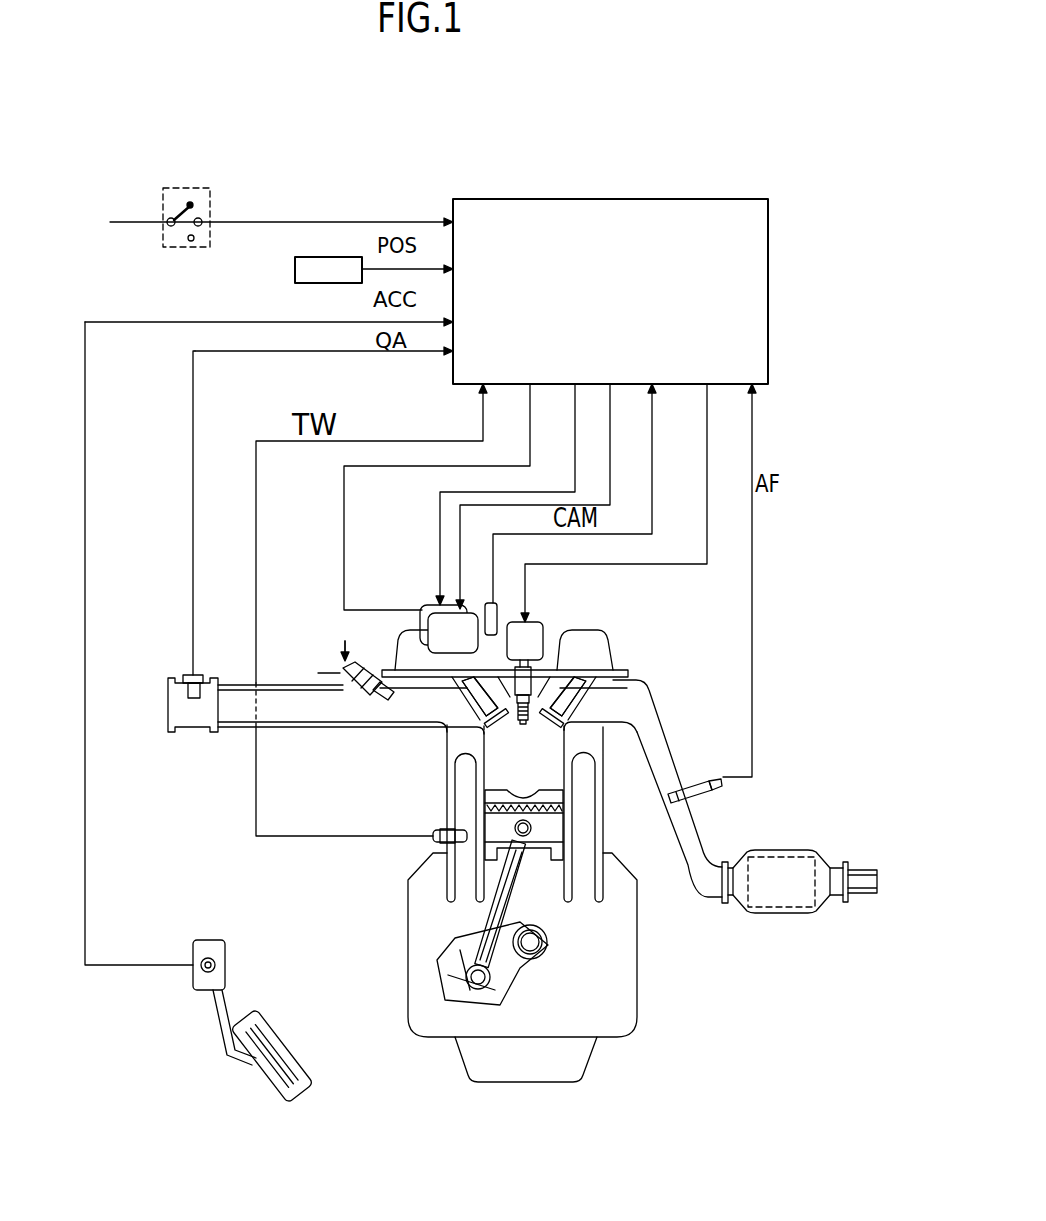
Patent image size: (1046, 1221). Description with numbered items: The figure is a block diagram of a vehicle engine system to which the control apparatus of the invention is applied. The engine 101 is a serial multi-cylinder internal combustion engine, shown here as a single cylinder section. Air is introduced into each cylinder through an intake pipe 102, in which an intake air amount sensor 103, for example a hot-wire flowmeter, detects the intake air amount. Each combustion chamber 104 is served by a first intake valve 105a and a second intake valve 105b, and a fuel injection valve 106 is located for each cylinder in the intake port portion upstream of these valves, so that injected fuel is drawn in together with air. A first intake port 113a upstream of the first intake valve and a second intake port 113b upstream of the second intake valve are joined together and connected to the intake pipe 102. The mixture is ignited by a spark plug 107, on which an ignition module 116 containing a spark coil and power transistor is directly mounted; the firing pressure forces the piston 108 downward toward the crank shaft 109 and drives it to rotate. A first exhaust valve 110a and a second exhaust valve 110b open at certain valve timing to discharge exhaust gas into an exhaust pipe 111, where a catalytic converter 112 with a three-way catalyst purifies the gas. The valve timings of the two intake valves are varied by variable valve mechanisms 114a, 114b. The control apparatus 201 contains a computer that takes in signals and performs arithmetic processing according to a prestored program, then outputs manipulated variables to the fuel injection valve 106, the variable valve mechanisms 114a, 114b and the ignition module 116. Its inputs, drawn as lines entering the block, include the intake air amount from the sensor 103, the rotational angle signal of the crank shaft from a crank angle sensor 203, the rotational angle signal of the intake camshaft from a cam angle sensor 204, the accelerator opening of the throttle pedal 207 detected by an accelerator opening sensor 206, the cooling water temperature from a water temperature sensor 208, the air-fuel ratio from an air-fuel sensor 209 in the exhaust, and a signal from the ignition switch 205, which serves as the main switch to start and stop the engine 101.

The engine 101 is at (617, 998).
The intake pipe 102 is at (197, 732).
The intake air amount sensor 103 is at (196, 675).
The combustion chamber 104 is at (535, 752).
The first intake valve 105a is at (480, 723).
The second intake valve 105b is at (382, 736).
The fuel injection valve 106 is at (372, 697).
The spark plug 107 is at (526, 677).
The piston 108 is at (545, 830).
The crank shaft 109 is at (548, 942).
The first exhaust valve 110a is at (560, 712).
The second exhaust valve 110b is at (725, 675).
The exhaust pipe 111 is at (700, 830).
The catalytic converter 112 is at (800, 850).
The first intake port 113a is at (328, 636).
The second intake port 113b is at (328, 632).
The variable valve mechanism 114a is at (424, 692).
The variable valve mechanism 114b is at (428, 605).
The ignition module 116 is at (537, 622).
The control apparatus 201 is at (600, 199).
The crank angle sensor 203 is at (295, 272).
The cam angle sensor 204 is at (490, 603).
The ignition switch 205 is at (198, 185).
The accelerator opening sensor 206 is at (212, 952).
The throttle pedal 207 is at (284, 1037).
The water temperature sensor 208 is at (449, 830).
The air-fuel sensor 209 is at (718, 787).